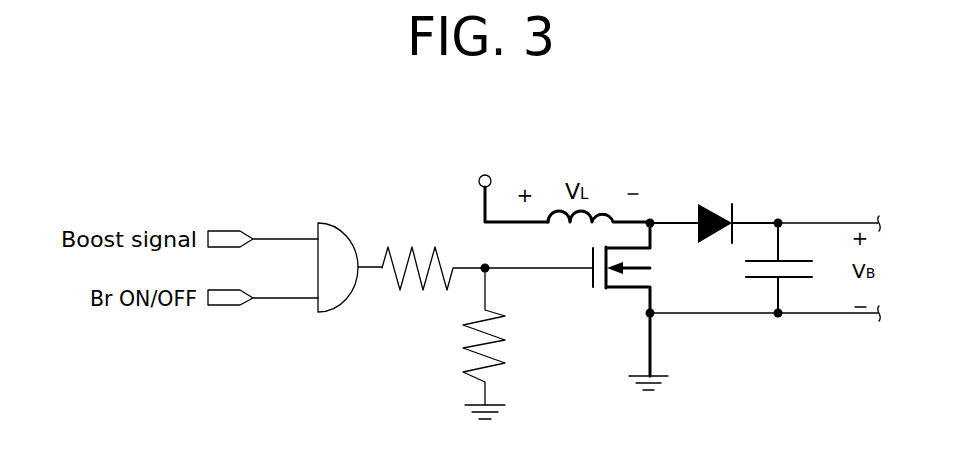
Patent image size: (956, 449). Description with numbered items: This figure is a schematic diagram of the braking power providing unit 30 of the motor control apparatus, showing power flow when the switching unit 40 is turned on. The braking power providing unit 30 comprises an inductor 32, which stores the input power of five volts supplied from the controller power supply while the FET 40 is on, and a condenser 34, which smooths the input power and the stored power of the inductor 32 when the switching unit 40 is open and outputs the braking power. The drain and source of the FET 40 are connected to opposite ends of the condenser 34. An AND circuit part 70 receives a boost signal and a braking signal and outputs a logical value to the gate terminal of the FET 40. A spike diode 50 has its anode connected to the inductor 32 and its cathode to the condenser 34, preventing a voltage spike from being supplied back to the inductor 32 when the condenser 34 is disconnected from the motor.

The braking power providing unit 30 is at (757, 93).
The inductor 32 is at (607, 212).
The condenser 34 is at (800, 261).
The switching unit 40 is at (623, 290).
The spike diode 50 is at (712, 238).
The AND circuit part 70 is at (333, 312).